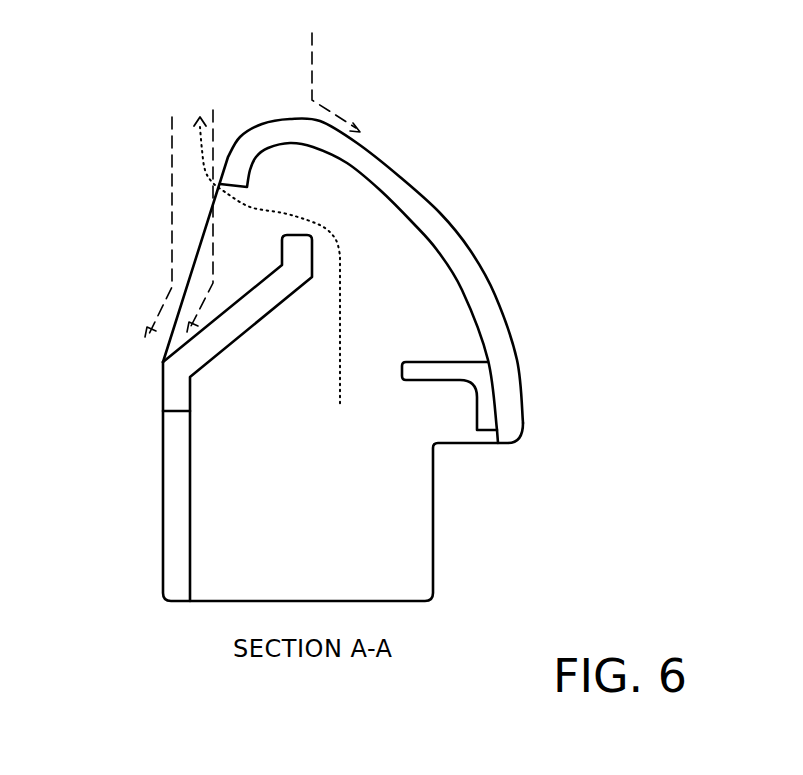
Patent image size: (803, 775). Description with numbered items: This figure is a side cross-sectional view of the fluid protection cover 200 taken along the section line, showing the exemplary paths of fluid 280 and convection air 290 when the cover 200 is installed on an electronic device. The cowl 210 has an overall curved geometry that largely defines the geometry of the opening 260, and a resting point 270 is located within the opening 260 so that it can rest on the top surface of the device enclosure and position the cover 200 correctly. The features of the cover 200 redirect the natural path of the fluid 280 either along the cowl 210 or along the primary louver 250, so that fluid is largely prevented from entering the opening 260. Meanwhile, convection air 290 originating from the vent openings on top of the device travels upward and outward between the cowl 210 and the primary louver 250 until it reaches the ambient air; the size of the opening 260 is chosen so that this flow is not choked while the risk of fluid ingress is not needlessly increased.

The fluid protection cover 200 is at (108, 102).
The cowl 210 is at (257, 147).
The primary louver 250 is at (257, 303).
The opening 260 is at (382, 243).
The resting points 270 is at (433, 362).
The fluid 280 is at (312, 43).
The convection air 290 is at (283, 215).